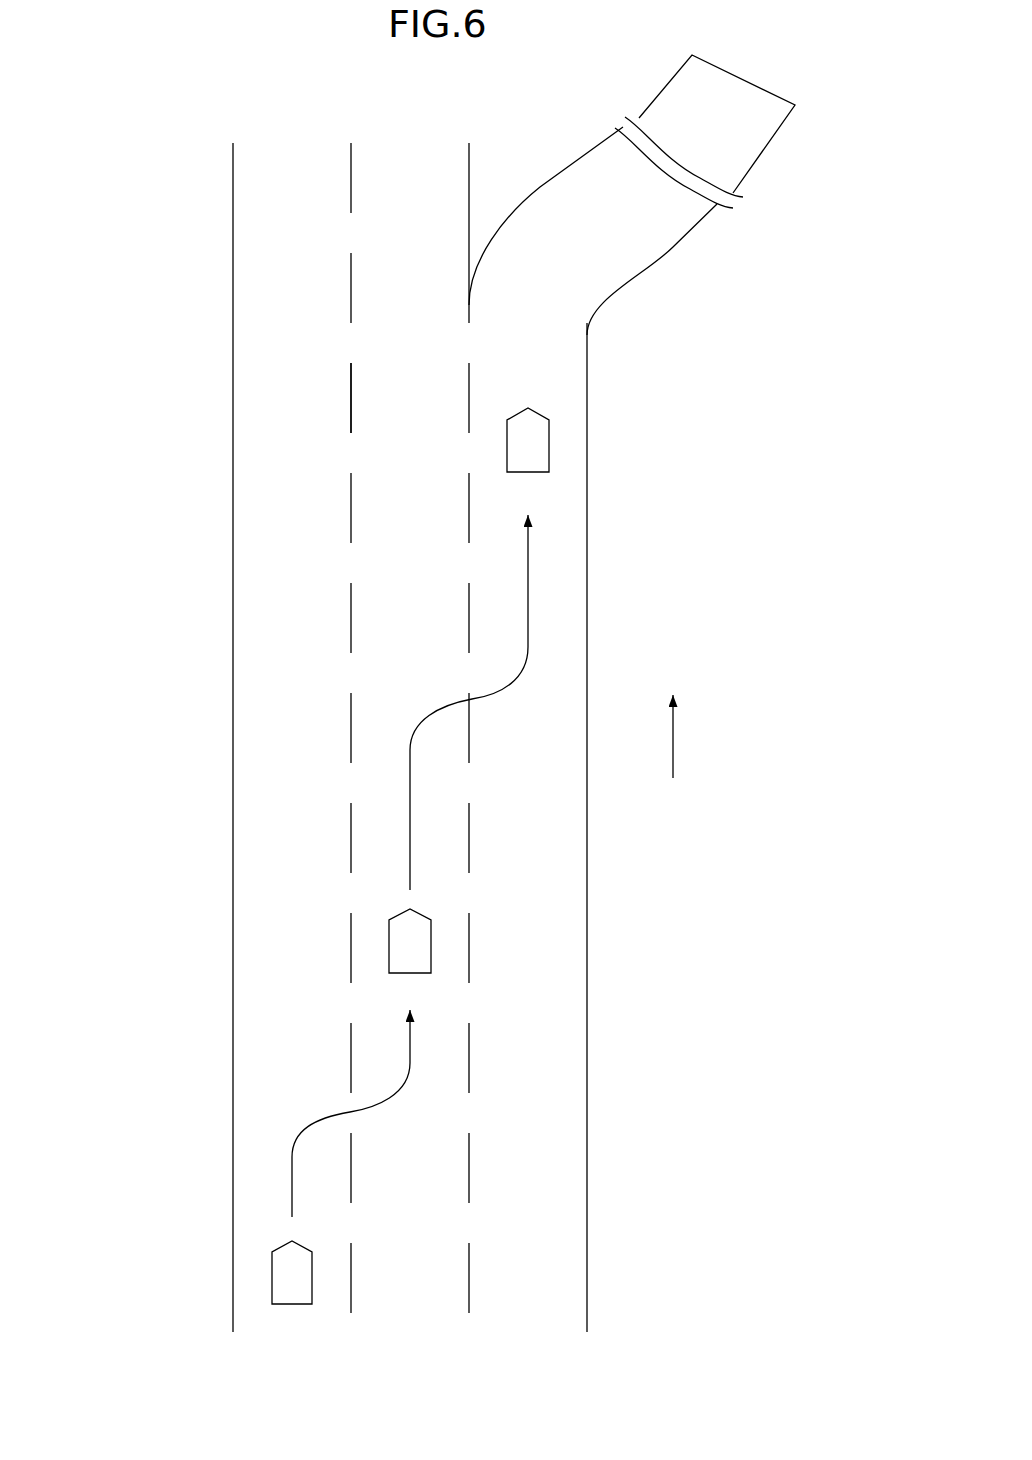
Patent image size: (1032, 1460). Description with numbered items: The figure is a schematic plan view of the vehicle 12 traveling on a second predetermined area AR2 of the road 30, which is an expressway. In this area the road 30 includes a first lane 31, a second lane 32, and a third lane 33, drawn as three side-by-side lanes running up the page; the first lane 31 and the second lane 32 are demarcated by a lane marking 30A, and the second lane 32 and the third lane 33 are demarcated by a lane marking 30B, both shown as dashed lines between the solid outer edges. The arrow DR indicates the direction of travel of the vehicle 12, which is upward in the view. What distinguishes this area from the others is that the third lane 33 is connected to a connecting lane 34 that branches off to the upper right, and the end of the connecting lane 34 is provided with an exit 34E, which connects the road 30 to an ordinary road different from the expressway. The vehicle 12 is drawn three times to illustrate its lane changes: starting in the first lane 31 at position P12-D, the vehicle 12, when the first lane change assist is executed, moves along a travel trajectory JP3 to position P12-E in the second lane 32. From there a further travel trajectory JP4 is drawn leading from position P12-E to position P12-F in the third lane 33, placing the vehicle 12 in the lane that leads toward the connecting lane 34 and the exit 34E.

The vehicle 12 is at (416, 895).
The road 30 is at (640, 572).
The lane marking 30A is at (352, 405).
The lane marking 30B is at (470, 397).
The first lane 31 is at (245, 270).
The second lane 32 is at (370, 192).
The third lane 33 is at (568, 838).
The connecting lane 34 is at (660, 232).
The exit 34E is at (767, 83).
The second predetermined area AR2 is at (190, 455).
The arrow indicating direction of travel DR is at (675, 742).
The travel trajectory JP3 is at (375, 1110).
The travel trajectory JP4 is at (497, 698).
The position P12-D is at (268, 1277).
The position P12-E is at (387, 947).
The position P12-F is at (552, 446).